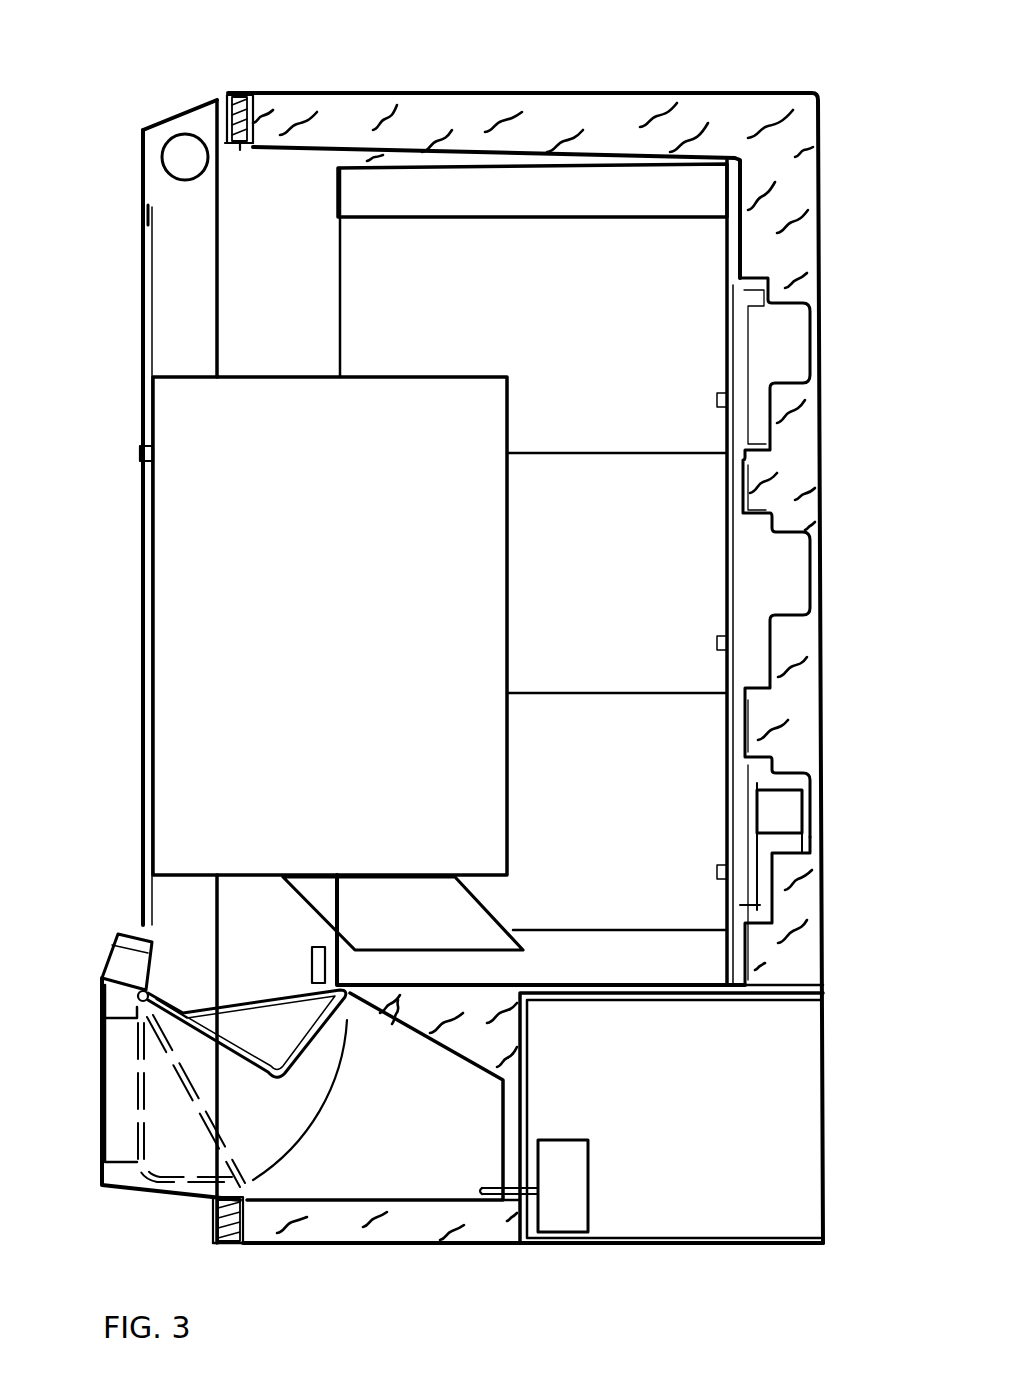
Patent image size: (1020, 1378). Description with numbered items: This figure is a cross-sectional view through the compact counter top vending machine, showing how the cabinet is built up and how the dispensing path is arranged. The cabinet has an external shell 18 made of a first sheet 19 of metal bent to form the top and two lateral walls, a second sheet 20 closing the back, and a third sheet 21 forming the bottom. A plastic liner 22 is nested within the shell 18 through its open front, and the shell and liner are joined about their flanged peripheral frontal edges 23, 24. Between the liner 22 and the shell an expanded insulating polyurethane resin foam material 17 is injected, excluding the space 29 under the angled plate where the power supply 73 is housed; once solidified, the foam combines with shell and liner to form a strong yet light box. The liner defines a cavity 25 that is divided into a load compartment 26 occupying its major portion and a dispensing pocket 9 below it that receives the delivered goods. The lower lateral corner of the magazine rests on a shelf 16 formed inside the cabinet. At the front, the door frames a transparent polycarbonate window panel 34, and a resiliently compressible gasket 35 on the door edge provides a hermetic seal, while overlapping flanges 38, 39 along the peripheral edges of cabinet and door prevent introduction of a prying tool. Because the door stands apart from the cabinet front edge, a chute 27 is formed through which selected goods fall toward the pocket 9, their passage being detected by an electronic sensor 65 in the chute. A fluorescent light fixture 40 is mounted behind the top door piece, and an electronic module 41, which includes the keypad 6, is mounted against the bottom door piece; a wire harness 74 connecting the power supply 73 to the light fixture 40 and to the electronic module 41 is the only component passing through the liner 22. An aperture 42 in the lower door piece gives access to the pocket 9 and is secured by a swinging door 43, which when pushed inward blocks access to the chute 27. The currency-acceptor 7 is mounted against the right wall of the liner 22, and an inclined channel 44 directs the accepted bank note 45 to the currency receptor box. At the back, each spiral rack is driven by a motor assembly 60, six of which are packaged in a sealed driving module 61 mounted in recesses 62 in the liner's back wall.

The external shell 18 is at (746, 69).
The first sheet 19 is at (620, 92).
The insulating polyurethane resin foam material 17 is at (797, 150).
The second sheet 20 is at (814, 278).
The transparent polycarbonate window panel 34 is at (145, 228).
The cavity 25 is at (305, 338).
The overlapping flange 38 is at (232, 96).
The flanged peripheral frontal edge 24 is at (250, 105).
The overlapping flange 39 is at (240, 150).
The plastic liner 22 is at (368, 160).
The load compartment 26 is at (385, 158).
The fluorescent light fixture 40 is at (168, 158).
The bank note 45 is at (140, 455).
The currency-acceptor 7 is at (175, 634).
The motor assembly 60 is at (812, 773).
The sealed driving module 61 is at (814, 846).
The recess 62 is at (821, 848).
The keypad 6 is at (112, 947).
The electronic module 41 is at (142, 959).
The chute 27 is at (267, 918).
The electronic sensor 65 is at (312, 965).
The inclined channel 44 is at (500, 901).
The aperture 42 is at (120, 1092).
The swinging door 43 is at (190, 1126).
The shelf 16 is at (400, 1020).
The dispensing pocket 9 is at (390, 1145).
The wire harness 74 is at (495, 1185).
The power supply 73 is at (587, 1140).
The space 29 is at (720, 1150).
The resiliently compressible gasket 35 is at (213, 1218).
The flanged peripheral frontal edge 23 is at (233, 1246).
The third sheet 21 is at (512, 1244).